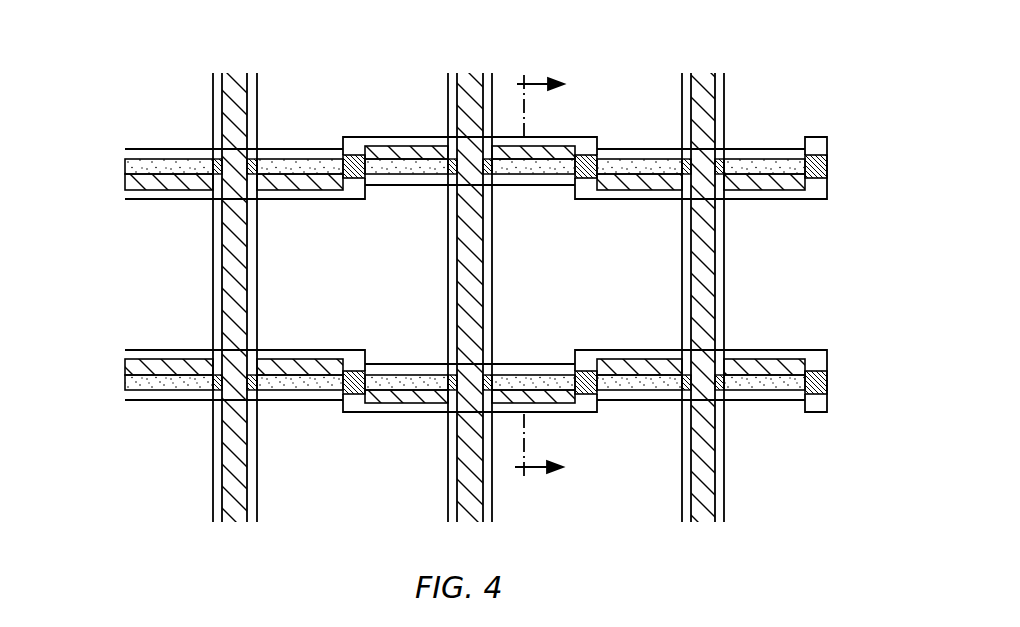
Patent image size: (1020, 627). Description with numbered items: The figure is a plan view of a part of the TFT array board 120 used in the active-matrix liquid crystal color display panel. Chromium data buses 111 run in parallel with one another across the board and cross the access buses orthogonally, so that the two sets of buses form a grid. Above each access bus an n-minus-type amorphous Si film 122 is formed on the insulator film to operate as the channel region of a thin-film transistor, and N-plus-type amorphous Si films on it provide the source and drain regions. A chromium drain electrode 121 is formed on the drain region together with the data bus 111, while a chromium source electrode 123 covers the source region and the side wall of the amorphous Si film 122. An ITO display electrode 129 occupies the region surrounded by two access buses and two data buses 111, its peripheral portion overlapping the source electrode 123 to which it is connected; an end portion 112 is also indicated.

The data bus 111 is at (468, 85).
The end contact portion 112 is at (830, 168).
The TFT array board 120 is at (775, 117).
The drain electrode 121 is at (296, 152).
The amorphous Si film 122 is at (123, 166).
The source electrode 123 is at (123, 182).
The display electrode 129 is at (628, 93).